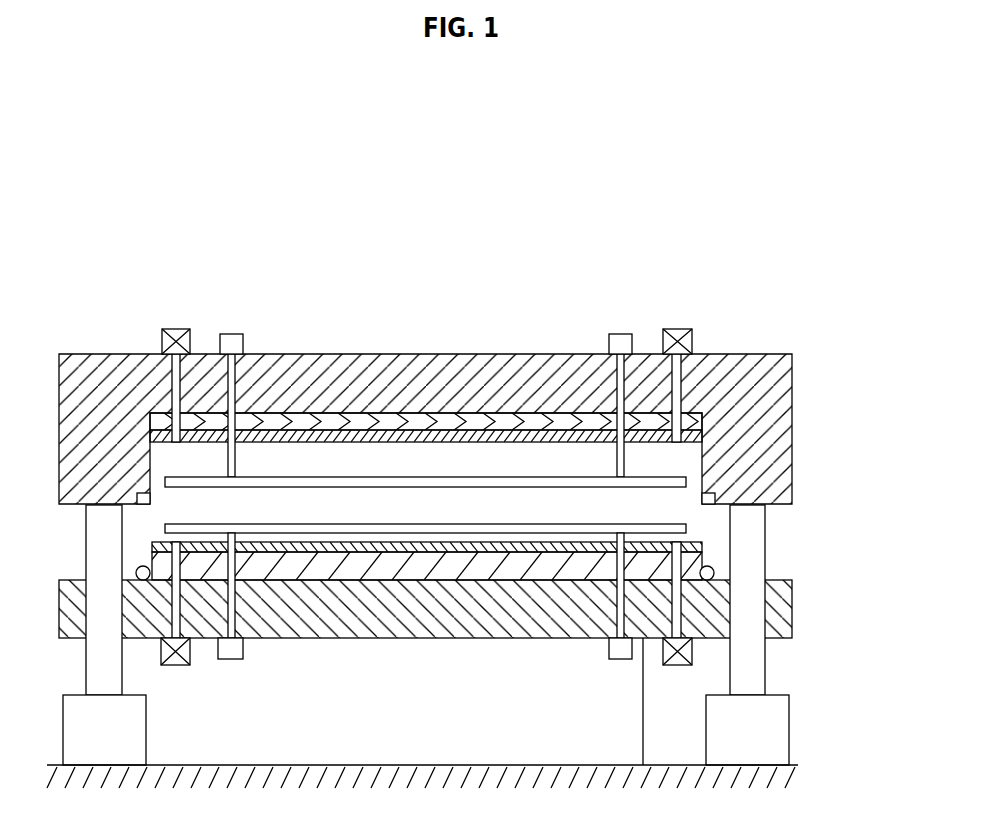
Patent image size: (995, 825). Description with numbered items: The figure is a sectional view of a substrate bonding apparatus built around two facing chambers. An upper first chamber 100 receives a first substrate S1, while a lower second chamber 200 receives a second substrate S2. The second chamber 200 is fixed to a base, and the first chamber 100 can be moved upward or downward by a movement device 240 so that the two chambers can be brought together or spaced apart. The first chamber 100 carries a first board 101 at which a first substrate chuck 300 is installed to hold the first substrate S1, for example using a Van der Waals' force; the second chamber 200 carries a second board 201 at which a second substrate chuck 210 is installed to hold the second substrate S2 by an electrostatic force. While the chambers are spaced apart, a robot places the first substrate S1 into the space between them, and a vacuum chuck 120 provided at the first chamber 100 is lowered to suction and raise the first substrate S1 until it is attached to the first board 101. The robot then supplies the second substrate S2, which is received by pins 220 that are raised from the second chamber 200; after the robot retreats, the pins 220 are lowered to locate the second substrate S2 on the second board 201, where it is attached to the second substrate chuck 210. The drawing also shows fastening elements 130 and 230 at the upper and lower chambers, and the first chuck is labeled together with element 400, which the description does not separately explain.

The first chamber 100 is at (780, 369).
The first board 101 is at (568, 425).
The vacuum chuck 120 is at (232, 378).
The fastening member 130 is at (174, 331).
The second chamber 200 is at (780, 602).
The second board 201 is at (588, 567).
The second substrate chuck 210 is at (415, 548).
The pin 220 is at (233, 659).
The fastening member 230 is at (174, 665).
The movement device 240 is at (775, 725).
The first substrate chuck 300 is at (426, 366).
The cooling unit 400 is at (380, 440).
The first substrate S1 is at (475, 483).
The second substrate S2 is at (510, 530).